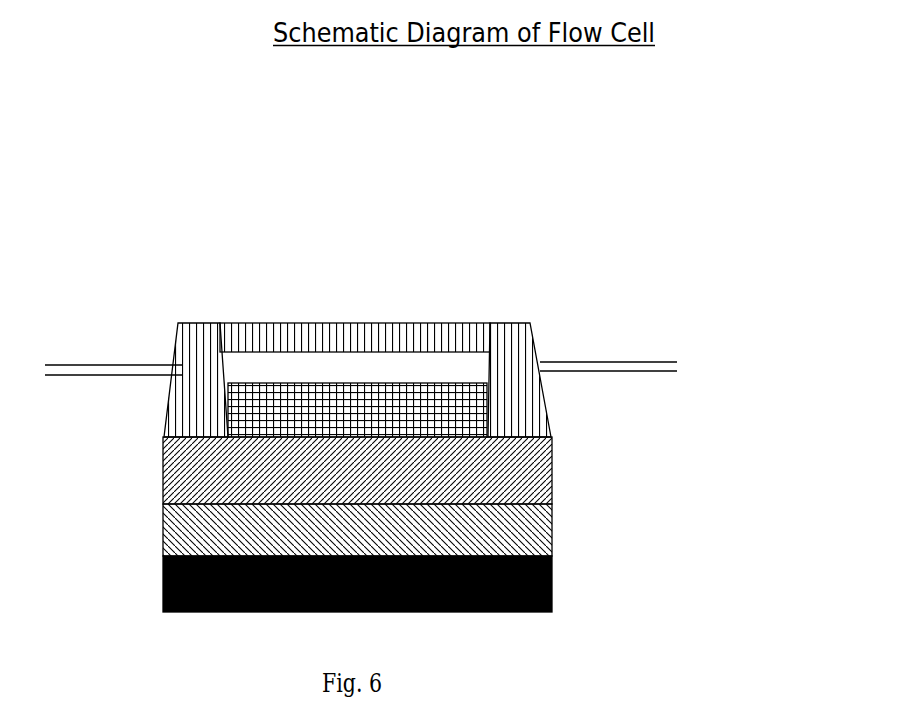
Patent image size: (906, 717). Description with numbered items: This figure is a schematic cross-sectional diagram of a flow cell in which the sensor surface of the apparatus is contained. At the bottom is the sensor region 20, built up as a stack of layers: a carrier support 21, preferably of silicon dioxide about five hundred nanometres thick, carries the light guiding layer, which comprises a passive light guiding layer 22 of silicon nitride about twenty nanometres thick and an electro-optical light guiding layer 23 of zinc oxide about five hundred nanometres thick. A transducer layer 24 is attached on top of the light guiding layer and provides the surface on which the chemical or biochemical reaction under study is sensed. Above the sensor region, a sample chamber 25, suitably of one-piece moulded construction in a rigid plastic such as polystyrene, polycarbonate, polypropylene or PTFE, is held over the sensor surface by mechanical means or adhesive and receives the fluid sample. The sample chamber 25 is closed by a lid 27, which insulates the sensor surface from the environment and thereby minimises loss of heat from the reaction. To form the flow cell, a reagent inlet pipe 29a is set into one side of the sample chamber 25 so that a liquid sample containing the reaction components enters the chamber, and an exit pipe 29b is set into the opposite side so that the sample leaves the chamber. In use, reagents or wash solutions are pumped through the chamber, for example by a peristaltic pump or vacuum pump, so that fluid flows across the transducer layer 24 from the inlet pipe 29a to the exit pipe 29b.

The sensor region 20 is at (392, 374).
The carrier support 21 is at (555, 583).
The passive light guiding layer 22 is at (555, 528).
The electro-optical light guiding layer 23 is at (553, 459).
The transducer layer 24 is at (415, 381).
The sample chamber 25 is at (553, 405).
The lid 27 is at (402, 323).
The reagent inlet pipe 29a is at (97, 363).
The exit pipe 29b is at (580, 360).